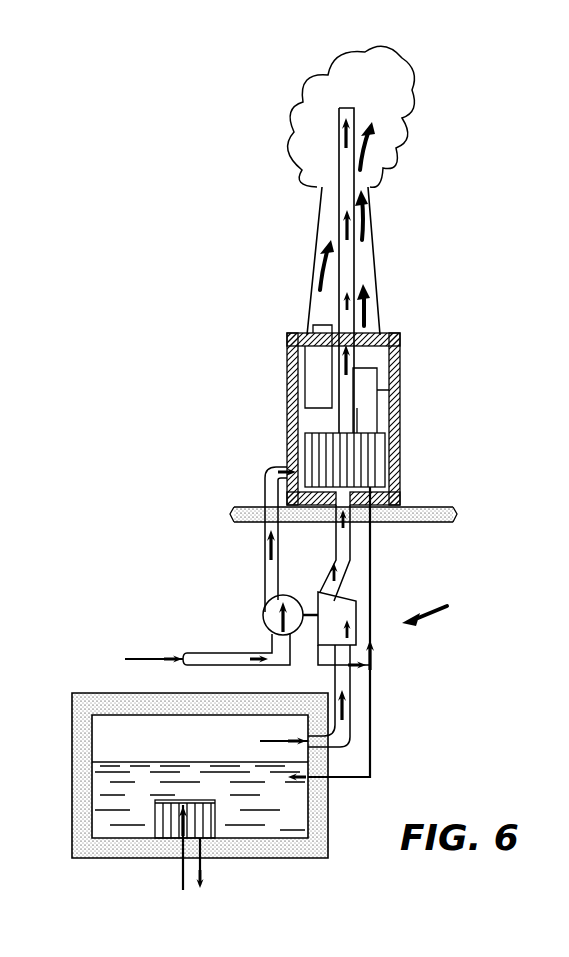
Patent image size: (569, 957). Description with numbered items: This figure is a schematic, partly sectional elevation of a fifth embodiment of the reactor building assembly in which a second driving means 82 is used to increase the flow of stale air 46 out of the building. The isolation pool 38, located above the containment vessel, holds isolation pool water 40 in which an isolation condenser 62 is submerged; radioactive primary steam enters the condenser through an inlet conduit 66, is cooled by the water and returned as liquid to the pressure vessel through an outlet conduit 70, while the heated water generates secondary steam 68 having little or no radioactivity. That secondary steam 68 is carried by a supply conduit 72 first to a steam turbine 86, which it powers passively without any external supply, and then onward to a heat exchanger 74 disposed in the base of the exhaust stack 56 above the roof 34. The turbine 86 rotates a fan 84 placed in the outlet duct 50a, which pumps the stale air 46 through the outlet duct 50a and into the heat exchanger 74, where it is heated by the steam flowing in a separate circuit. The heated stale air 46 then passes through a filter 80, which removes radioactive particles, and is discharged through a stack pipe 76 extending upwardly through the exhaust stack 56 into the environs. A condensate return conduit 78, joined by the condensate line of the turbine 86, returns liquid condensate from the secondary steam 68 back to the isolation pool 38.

The stack pipe 76 is at (339, 152).
The exhaust stack 56 is at (383, 246).
The filter 80 is at (380, 388).
The heat exchanger 74 is at (385, 462).
The roof 34 is at (430, 500).
The outlet duct 50a is at (262, 540).
The condensate return conduit 78 is at (372, 555).
The fan 84 is at (268, 612).
The steam turbine 86 is at (358, 616).
The second driving means 82 is at (436, 605).
The stale air 46 is at (143, 659).
The supply conduit 72 is at (372, 698).
The isolation pool 38 is at (72, 735).
The isolation pool water 40 is at (165, 762).
The secondary steam 68 is at (260, 741).
The isolation condenser 62 is at (155, 820).
The inlet conduit 66 is at (183, 872).
The outlet conduit 70 is at (212, 870).